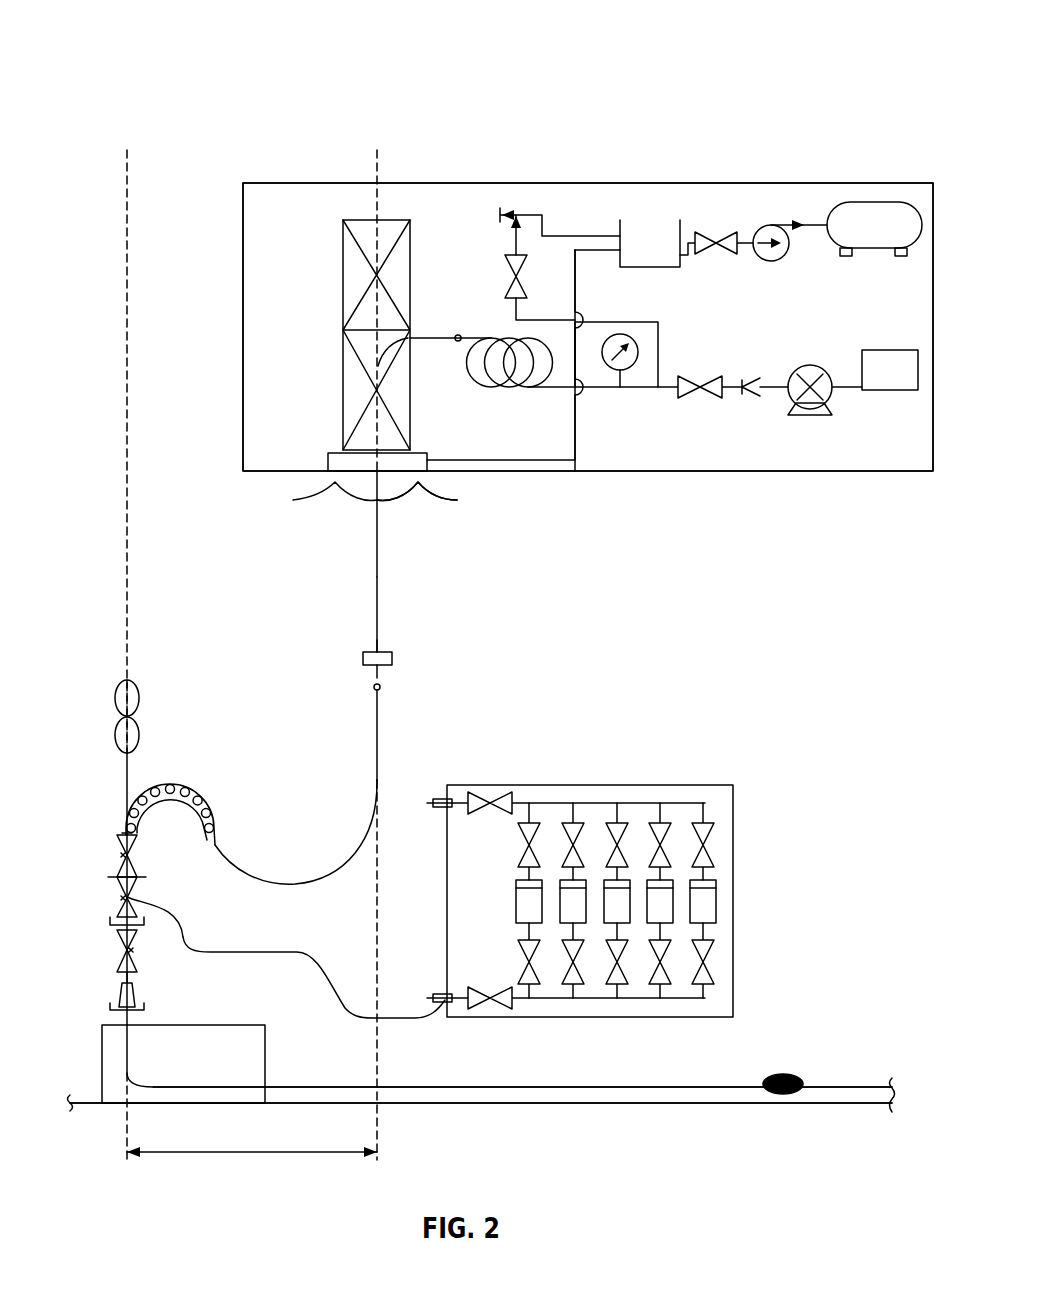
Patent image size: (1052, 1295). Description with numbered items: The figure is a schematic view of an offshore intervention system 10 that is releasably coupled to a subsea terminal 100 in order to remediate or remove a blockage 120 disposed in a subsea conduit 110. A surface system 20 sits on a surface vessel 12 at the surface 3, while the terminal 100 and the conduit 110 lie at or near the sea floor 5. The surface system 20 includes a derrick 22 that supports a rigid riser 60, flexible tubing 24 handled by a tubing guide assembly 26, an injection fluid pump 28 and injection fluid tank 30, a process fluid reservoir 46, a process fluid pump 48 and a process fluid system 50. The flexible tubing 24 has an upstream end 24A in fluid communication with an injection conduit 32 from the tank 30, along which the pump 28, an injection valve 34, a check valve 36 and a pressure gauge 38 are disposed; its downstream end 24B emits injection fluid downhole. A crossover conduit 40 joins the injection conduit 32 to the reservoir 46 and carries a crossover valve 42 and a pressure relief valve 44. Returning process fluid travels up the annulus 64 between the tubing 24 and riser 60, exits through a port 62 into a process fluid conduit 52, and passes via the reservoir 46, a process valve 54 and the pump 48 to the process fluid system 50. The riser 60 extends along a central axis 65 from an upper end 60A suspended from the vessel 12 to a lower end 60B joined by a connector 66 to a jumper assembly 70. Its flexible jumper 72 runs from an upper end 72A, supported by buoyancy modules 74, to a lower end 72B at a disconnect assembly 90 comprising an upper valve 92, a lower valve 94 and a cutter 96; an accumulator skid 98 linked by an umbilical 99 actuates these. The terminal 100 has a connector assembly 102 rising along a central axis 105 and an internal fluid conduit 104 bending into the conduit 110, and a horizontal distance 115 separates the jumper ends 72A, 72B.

The offshore intervention system 10 is at (148, 49).
The surface system 20 is at (584, 158).
The derrick 22 is at (360, 218).
The flexible tubing 24 is at (432, 343).
The upstream end 24A is at (455, 333).
The downstream end 24B is at (381, 687).
The tubing guide assembly 26 is at (498, 388).
The injection fluid pump 28 is at (815, 412).
The injection fluid tank 30 is at (890, 392).
The injection conduit 32 is at (838, 380).
The injection valve 34 is at (692, 398).
The check valve 36 is at (750, 398).
The pressure gauge 38 is at (625, 372).
The crossover conduit 40 is at (660, 358).
The crossover valve 42 is at (507, 265).
The pressure relief valve 44 is at (536, 212).
The process fluid reservoir 46 is at (655, 225).
The process fluid pump 48 is at (776, 261).
The process fluid system 50 is at (880, 250).
The process fluid conduit 52 is at (813, 223).
The process valve 54 is at (705, 255).
The surface vessel 12 is at (880, 478).
The surface 3 is at (455, 497).
The port 62 is at (382, 463).
The rigid riser 60 is at (378, 577).
The upper end 60A is at (373, 458).
The lower end 60B is at (375, 648).
The annulus 64 is at (378, 613).
The connector 66 is at (393, 655).
The jumper assembly 70 is at (379, 730).
The flexible jumper 72 is at (375, 750).
The upper end 72A is at (365, 666).
The lower end 72B is at (125, 833).
The buoyancy modules 74 is at (135, 697).
The central axis 65 is at (381, 847).
The disconnect assembly 90 is at (123, 929).
The upper valve 92 is at (133, 860).
The lower valve 94 is at (125, 898).
The cutter 96 is at (135, 887).
The accumulator skid 98 is at (678, 792).
The umbilical 99 is at (310, 957).
The subsea terminal 100 is at (102, 1065).
The connector assembly 102 is at (120, 988).
The internal fluid conduit 104 is at (217, 1085).
The central axis 105 is at (130, 610).
The subsea conduit 110 is at (650, 1088).
The sea floor 5 is at (853, 1102).
The horizontal distance 115 is at (217, 1150).
The blockage 120 is at (793, 1073).